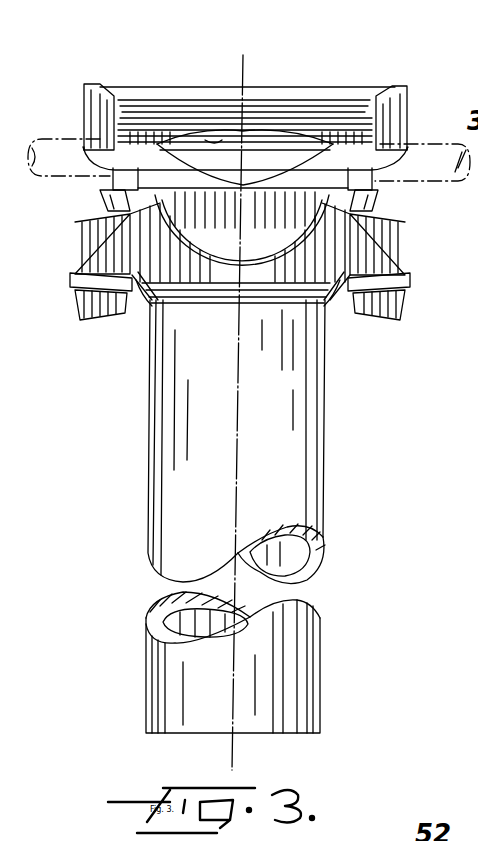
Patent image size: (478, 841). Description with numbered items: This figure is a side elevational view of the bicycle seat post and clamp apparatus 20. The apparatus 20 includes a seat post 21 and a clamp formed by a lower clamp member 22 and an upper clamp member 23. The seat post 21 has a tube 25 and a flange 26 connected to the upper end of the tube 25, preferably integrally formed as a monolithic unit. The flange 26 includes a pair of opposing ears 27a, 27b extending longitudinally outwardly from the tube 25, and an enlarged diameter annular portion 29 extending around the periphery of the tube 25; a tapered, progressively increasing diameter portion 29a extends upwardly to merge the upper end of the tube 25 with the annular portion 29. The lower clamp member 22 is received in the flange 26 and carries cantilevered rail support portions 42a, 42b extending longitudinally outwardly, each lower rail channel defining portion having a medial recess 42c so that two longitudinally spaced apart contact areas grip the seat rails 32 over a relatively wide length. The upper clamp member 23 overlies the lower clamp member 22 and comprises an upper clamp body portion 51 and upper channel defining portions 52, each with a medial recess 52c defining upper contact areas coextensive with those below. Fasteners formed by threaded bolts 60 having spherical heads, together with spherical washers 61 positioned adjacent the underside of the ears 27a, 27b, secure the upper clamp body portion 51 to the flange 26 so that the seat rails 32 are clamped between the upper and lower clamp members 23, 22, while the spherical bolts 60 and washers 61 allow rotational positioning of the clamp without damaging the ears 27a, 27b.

The apparatus 20 is at (325, 70).
The seat post 21 is at (332, 461).
The lower clamp member 22 is at (338, 172).
The upper clamp member 23 is at (133, 86).
The tube 25 is at (150, 443).
The flange 26 is at (70, 254).
The ear 27a is at (76, 242).
The ear 27b is at (400, 262).
The enlarged diameter annular portion 29 is at (280, 272).
The tapered portion 29a is at (150, 298).
The seat rail 32 is at (60, 132).
The cantilevered rail support portion 42a is at (103, 192).
The cantilevered rail support portion 42b is at (372, 200).
The recess 42c is at (262, 182).
The upper clamp body portion 51 is at (90, 82).
The upper channel defining portion 52 is at (303, 160).
The recess 52c is at (222, 142).
The threaded bolt 60 is at (82, 322).
The spherical washer 61 is at (74, 292).